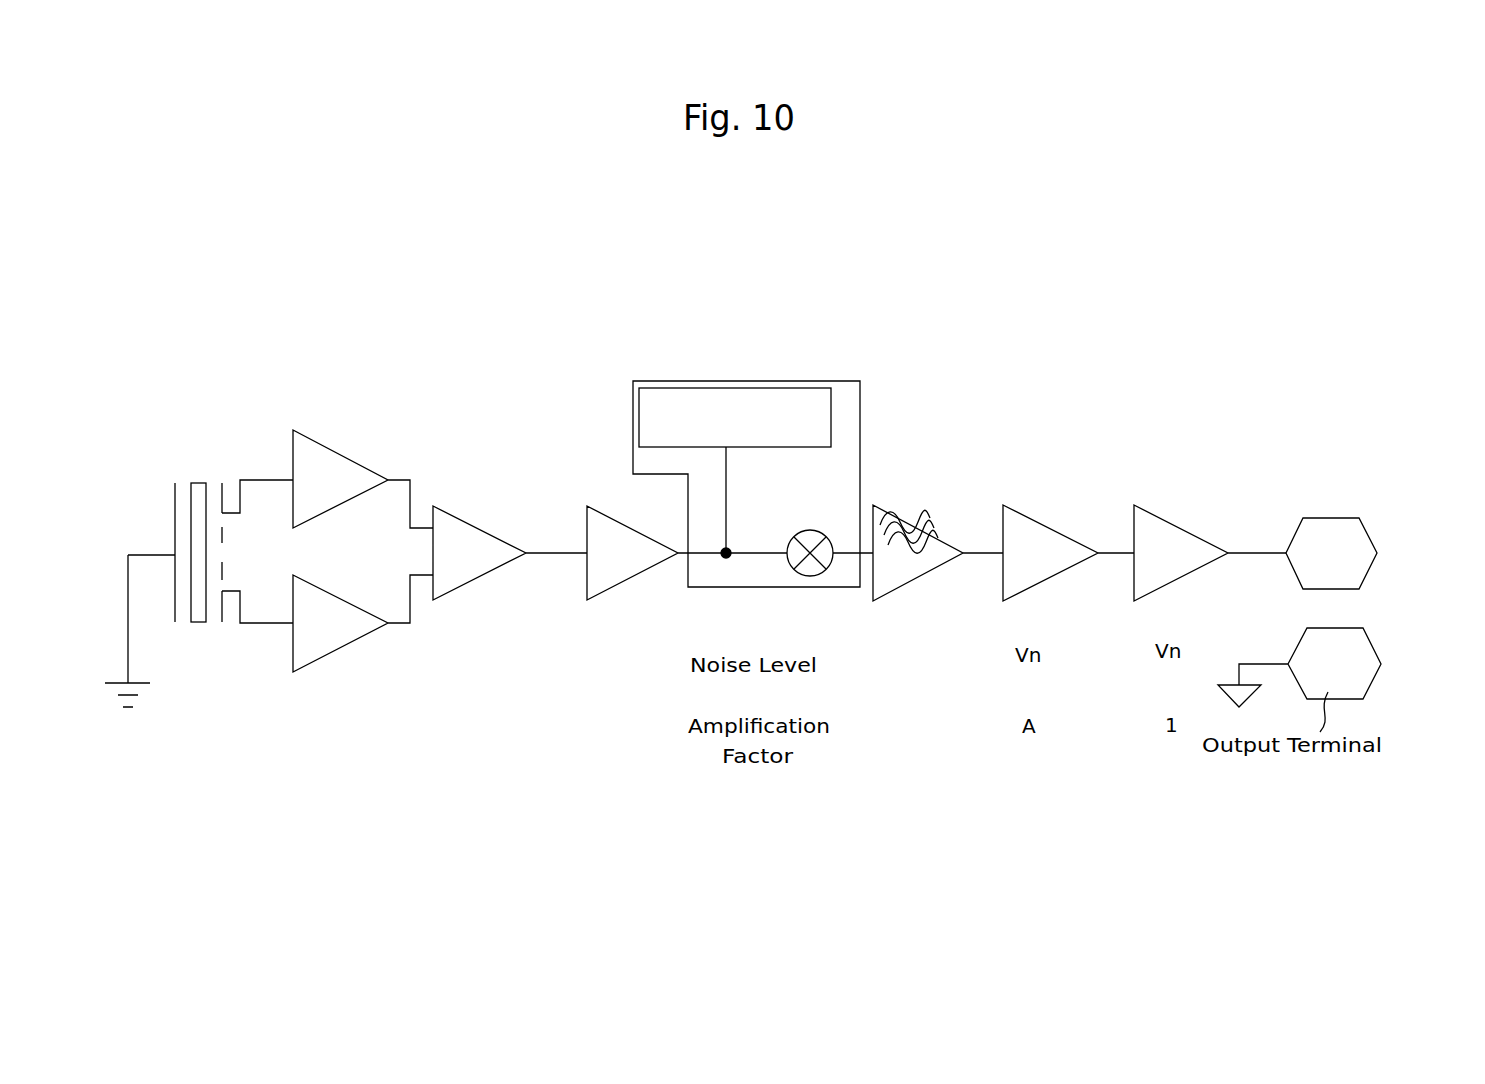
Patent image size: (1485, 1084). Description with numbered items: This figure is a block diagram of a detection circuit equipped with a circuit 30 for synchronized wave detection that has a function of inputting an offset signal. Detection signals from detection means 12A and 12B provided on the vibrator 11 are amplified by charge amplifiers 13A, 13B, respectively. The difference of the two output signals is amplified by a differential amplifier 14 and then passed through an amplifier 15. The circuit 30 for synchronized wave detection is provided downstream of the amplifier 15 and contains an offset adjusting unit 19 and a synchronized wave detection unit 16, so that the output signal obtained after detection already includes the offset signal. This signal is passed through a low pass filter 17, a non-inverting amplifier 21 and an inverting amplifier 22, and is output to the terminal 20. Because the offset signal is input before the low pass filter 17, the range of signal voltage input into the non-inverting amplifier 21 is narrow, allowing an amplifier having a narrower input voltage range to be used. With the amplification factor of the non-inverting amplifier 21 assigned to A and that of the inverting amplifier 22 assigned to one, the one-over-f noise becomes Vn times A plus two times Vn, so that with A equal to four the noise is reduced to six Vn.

The vibrator 11 is at (197, 492).
The detection means 12A is at (223, 505).
The detection means 12B is at (223, 610).
The charge amplifier 13A is at (317, 450).
The charge amplifier 13B is at (333, 643).
The differential amplifier 14 is at (458, 527).
The amplifier 15 is at (605, 575).
The synchronized wave detection unit 16 is at (812, 568).
The low pass filter 17 is at (910, 570).
The offset adjusting unit 19 is at (709, 395).
The output terminal 20 is at (1323, 525).
The non-inverting amplifier 21 is at (1028, 532).
The inverting amplifier 22 is at (1158, 572).
The circuit for synchronized wave detection 30 is at (838, 388).